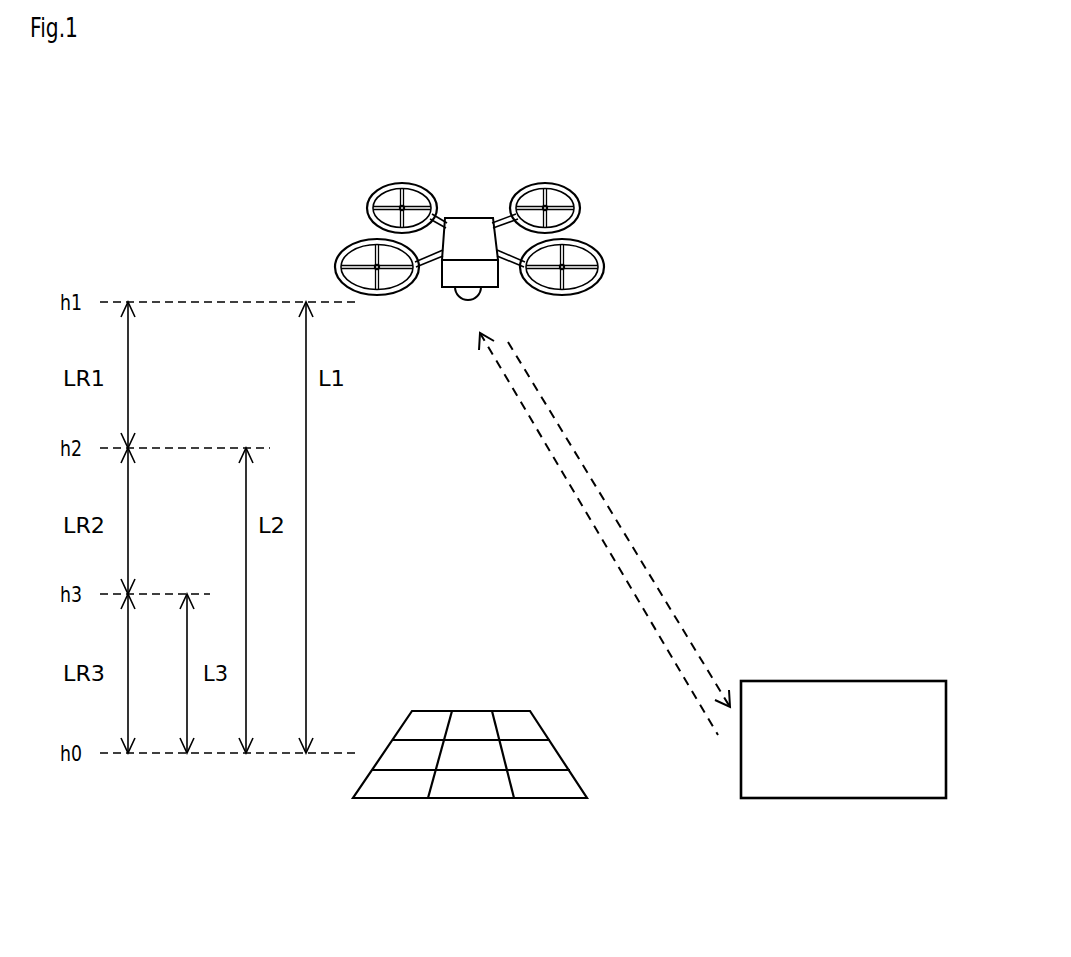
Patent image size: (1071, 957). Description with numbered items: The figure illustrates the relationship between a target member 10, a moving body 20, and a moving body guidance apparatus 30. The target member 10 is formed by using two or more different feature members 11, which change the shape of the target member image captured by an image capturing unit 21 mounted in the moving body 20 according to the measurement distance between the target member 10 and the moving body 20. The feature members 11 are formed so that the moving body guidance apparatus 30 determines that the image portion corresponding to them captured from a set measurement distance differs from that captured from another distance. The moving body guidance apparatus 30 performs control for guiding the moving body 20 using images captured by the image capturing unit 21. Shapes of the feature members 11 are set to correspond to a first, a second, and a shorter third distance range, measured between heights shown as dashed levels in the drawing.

The target member 10 is at (472, 710).
The feature members 11 is at (472, 787).
The moving body 20 is at (468, 228).
The image capturing unit 21 is at (483, 297).
The moving body guidance apparatus 30 is at (847, 681).